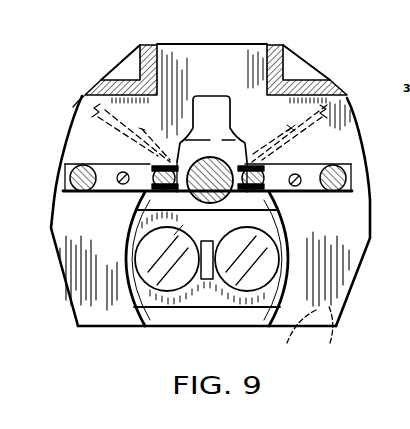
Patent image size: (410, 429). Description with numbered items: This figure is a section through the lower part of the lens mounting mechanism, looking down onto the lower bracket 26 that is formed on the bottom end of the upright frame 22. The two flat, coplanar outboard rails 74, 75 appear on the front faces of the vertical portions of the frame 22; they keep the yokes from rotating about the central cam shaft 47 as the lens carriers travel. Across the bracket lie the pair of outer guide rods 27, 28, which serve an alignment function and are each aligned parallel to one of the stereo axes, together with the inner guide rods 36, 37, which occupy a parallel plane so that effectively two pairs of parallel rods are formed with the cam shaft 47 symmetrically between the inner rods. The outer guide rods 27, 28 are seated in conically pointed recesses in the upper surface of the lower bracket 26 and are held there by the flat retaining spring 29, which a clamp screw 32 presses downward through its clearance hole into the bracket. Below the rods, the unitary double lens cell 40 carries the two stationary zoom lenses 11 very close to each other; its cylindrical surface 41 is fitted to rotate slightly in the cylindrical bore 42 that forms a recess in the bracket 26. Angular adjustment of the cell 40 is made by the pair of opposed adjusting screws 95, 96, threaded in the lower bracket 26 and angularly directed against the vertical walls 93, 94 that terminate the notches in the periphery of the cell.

The stationary lens 11 is at (172, 266).
The upright frame 22 is at (148, 57).
The lower bracket 26 is at (72, 274).
The outer guide rod 27 is at (351, 212).
The outer guide rod 28 is at (68, 177).
The flat retaining spring 29 is at (100, 196).
The clamp screw 32 is at (123, 194).
The inner guide rod 36 is at (130, 223).
The inner guide rod 37 is at (242, 192).
The double lens cell 40 is at (199, 307).
The cylindrical surface 41 is at (331, 332).
The cylindrical bore 42 is at (293, 335).
The cam shaft 47 is at (217, 162).
The outboard rail 74 is at (86, 96).
The outboard rail 75 is at (345, 110).
The vertical wall 93 is at (150, 154).
The vertical wall 94 is at (275, 158).
The adjusting screw 95 is at (142, 129).
The adjusting screw 96 is at (291, 128).